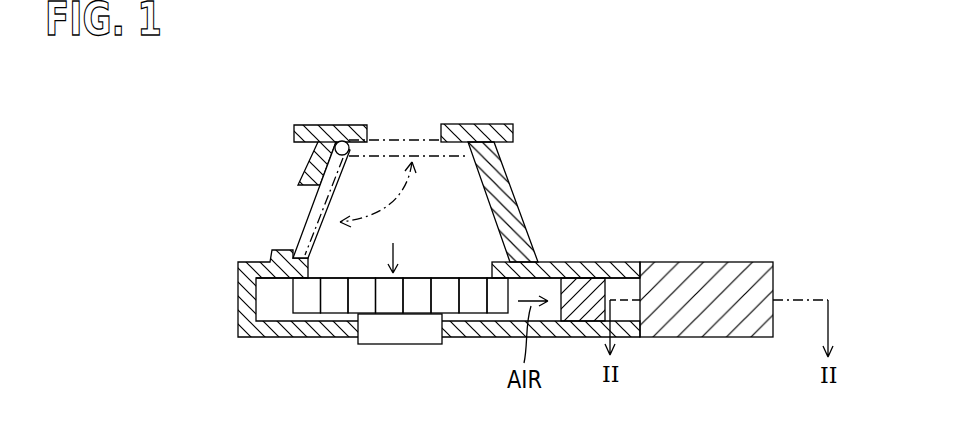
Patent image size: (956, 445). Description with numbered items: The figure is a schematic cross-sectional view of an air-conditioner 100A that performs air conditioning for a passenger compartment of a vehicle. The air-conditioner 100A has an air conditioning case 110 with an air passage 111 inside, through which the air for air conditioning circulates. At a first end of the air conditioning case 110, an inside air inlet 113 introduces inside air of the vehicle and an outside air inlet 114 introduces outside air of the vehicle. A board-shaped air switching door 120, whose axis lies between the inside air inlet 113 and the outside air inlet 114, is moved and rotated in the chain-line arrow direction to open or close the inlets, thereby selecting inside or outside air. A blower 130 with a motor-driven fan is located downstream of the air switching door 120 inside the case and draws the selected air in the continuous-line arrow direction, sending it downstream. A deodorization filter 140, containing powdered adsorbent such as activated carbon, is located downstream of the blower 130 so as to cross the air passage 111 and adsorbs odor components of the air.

The air-conditioner 100A is at (320, 110).
The air conditioning case 110 is at (568, 262).
The air passage 111 is at (621, 290).
The inside air inlet 113 is at (298, 215).
The outside air inlet 114 is at (393, 132).
The air switching door 120 is at (412, 140).
The blower 130 is at (398, 344).
The deodorization filter 140 is at (585, 321).